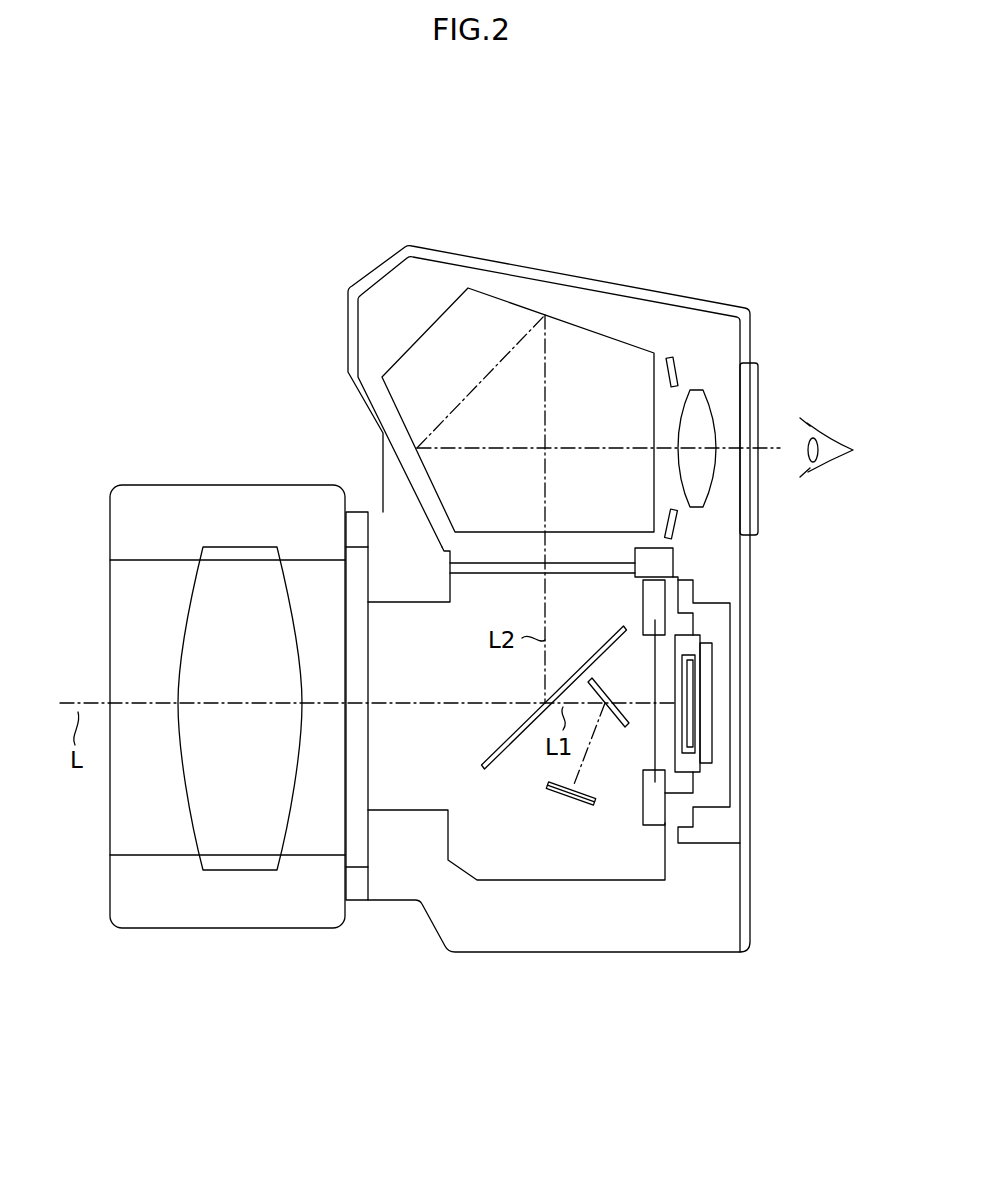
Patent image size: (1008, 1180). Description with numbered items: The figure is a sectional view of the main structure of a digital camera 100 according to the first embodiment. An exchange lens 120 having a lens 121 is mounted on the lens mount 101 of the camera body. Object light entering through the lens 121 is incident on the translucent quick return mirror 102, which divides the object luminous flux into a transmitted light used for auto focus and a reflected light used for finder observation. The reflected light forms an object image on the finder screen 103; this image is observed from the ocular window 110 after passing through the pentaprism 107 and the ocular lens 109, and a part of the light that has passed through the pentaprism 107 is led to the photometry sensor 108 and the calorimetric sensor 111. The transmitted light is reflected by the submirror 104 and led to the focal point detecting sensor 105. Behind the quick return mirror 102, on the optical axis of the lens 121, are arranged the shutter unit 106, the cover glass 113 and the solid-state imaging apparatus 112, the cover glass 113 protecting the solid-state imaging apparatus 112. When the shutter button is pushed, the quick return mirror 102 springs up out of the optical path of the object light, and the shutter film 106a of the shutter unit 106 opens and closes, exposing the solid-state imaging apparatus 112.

The digital camera 100 is at (400, 228).
The lens mount 101 is at (358, 523).
The quick return mirror 102 is at (490, 760).
The finder screen 103 is at (583, 573).
The submirror 104 is at (625, 680).
The focal point detecting sensor 105 is at (573, 790).
The shutter unit 106 is at (653, 813).
The shutter film 106a is at (652, 740).
The pentaprism 107 is at (590, 352).
The photometry sensor 108 is at (680, 368).
The ocular lens 109 is at (698, 402).
The ocular window 110 is at (753, 400).
The calorimetric sensor 111 is at (678, 522).
The solid-state imaging apparatus 112 is at (695, 683).
The cover glass 113 is at (688, 717).
The exchange lens 120 is at (168, 475).
The lens 121 is at (275, 817).